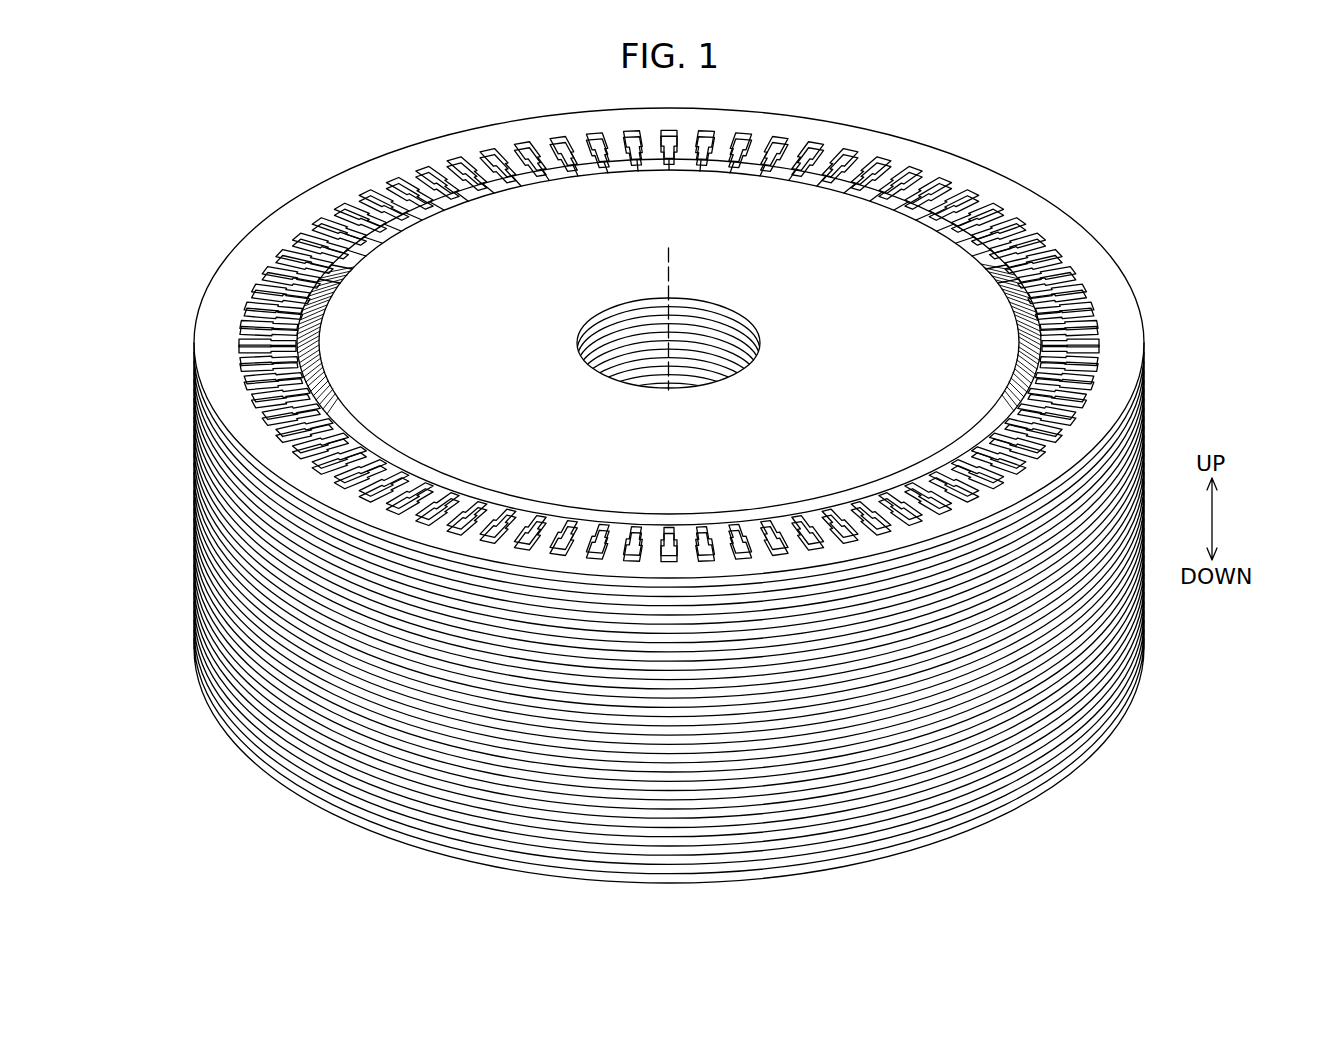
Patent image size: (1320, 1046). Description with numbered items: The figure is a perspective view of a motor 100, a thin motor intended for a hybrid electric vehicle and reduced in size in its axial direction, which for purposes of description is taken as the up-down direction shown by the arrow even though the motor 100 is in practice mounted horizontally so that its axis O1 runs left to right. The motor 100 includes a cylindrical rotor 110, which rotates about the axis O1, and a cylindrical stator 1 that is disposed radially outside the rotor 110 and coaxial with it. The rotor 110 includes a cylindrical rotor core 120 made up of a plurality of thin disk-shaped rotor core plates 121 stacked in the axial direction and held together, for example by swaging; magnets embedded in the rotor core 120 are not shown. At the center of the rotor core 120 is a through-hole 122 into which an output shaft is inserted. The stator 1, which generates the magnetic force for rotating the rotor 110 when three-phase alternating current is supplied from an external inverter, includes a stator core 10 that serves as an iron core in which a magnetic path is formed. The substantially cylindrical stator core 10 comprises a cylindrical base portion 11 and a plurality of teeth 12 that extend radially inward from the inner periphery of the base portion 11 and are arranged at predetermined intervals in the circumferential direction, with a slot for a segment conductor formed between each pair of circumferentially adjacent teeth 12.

The motor 100 is at (233, 150).
The stator 1 is at (312, 158).
The stator core 10 is at (377, 141).
The cylindrical base portion 11 is at (745, 150).
The teeth 12 is at (863, 193).
The rotor 110 is at (669, 495).
The rotor core 120 is at (936, 242).
The rotor core plates 121 is at (728, 340).
The through-hole 122 is at (683, 372).
The axis O1 is at (663, 263).